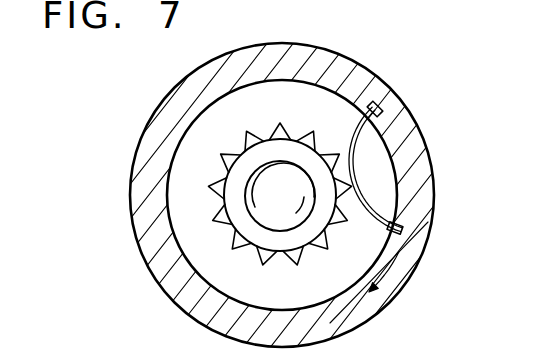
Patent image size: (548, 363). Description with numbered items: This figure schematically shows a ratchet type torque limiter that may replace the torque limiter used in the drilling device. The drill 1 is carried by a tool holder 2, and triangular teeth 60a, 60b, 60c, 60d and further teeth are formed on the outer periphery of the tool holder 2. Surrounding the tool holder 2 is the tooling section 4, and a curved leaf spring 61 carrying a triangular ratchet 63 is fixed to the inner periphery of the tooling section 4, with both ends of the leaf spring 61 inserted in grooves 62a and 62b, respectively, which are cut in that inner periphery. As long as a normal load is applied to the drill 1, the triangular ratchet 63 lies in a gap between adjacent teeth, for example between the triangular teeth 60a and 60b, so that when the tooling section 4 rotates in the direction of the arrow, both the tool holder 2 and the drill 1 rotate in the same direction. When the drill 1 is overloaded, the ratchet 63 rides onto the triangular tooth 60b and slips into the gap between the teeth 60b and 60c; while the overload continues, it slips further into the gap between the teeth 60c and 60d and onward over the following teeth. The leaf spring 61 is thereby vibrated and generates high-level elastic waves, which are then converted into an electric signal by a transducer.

The drill 1 is at (257, 207).
The tool holder 2 is at (240, 218).
The tooling section 4 is at (387, 302).
The triangular tooth 60a is at (333, 172).
The triangular tooth 60b is at (349, 208).
The triangular tooth 60c is at (331, 224).
The triangular tooth 60d is at (302, 259).
The curved leaf spring 61 is at (398, 185).
The groove 62a is at (380, 118).
The groove 62b is at (400, 237).
The triangular ratchet 63 is at (352, 177).